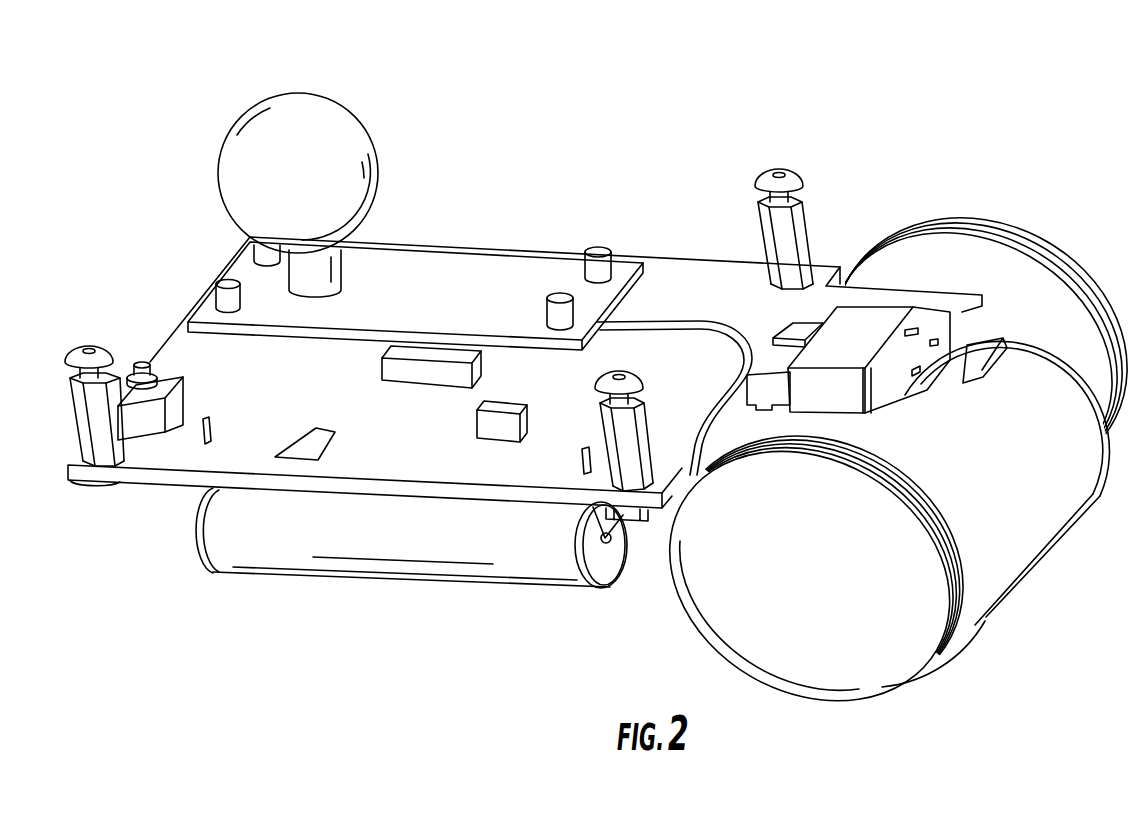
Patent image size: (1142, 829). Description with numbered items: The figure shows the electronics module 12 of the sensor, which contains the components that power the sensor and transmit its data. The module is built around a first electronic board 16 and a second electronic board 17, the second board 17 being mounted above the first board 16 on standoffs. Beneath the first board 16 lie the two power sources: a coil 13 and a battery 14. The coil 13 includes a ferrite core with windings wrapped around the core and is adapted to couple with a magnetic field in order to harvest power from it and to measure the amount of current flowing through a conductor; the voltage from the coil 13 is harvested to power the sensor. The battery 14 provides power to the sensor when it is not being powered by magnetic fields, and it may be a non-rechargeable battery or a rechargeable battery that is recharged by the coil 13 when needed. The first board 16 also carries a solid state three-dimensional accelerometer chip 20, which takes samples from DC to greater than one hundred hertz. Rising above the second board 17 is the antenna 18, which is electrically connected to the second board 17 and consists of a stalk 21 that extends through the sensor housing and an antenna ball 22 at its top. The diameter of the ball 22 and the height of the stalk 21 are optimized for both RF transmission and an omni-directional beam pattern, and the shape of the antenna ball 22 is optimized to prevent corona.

The electronics module 12 is at (708, 100).
The coil 13 is at (1050, 503).
The battery 14 is at (448, 568).
The first electronic board 16 is at (667, 282).
The second electronic board 17 is at (492, 268).
The antenna 18 is at (335, 103).
The 3D accelerometer chip 20 is at (303, 437).
The stalk 21 is at (340, 266).
The antenna ball 22 is at (283, 128).